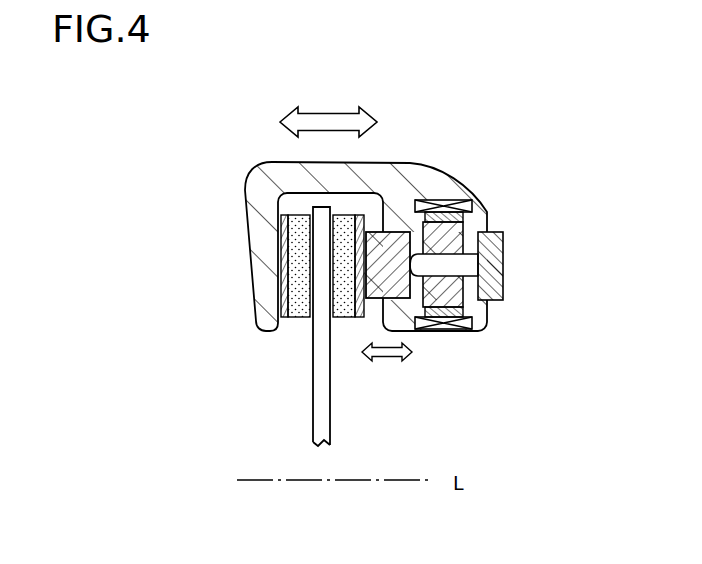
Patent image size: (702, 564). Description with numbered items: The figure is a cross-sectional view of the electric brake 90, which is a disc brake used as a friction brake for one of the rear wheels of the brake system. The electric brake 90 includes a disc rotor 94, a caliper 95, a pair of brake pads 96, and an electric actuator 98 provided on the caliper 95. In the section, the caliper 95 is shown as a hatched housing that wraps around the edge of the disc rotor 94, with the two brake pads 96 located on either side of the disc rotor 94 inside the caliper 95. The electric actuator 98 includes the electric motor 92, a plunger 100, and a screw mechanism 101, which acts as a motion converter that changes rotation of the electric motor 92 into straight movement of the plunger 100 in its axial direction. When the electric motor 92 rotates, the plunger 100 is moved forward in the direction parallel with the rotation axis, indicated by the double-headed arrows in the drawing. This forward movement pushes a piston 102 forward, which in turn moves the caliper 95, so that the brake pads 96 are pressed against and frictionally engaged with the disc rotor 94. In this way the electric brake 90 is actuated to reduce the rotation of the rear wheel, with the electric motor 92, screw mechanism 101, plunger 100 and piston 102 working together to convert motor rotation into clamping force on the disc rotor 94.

The electric brake 90 is at (445, 141).
The electric motor 92 is at (462, 326).
The disc rotor 94 is at (320, 417).
The caliper 95 is at (263, 175).
The brake pads 96 is at (291, 325).
The electric actuator 98 is at (485, 205).
The plunger 100 is at (453, 263).
The screw mechanism 101 is at (472, 289).
The piston 102 is at (390, 287).